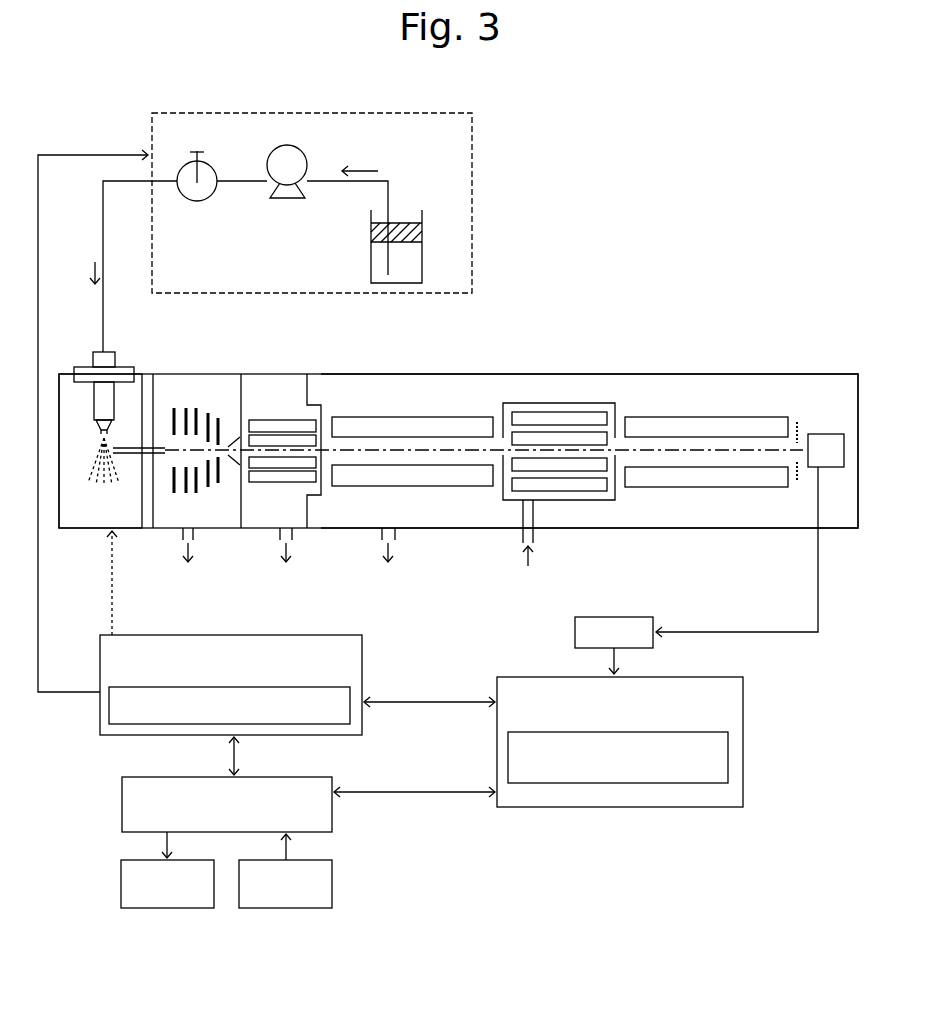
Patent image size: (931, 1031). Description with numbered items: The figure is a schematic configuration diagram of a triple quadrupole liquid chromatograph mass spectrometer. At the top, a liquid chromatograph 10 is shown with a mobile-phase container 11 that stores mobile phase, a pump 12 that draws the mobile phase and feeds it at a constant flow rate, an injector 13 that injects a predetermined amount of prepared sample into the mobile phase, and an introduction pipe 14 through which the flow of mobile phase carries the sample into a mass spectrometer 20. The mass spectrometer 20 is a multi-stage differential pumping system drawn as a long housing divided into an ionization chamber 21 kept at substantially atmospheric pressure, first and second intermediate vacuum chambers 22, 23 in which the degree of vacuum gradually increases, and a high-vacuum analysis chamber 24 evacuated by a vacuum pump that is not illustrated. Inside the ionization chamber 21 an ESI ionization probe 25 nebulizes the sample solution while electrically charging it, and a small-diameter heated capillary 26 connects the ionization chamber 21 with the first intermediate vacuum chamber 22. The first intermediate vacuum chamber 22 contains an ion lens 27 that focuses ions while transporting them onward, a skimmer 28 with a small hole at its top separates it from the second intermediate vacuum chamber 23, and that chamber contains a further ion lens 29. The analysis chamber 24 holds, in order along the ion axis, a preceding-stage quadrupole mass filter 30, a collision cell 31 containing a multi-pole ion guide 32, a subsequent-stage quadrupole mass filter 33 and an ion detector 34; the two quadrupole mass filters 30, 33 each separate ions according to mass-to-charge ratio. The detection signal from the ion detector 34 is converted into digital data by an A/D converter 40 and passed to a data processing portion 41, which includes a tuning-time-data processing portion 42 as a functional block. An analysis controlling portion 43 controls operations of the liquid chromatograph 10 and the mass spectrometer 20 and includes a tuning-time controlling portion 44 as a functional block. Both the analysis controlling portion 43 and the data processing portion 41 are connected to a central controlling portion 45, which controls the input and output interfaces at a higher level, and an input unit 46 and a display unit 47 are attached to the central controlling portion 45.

The liquid chromatograph 10 is at (473, 144).
The mobile-phase container 11 is at (423, 241).
The pump 12 is at (290, 200).
The injector 13 is at (201, 202).
The introduction pipe 14 is at (103, 207).
The mass spectrometer 20 is at (675, 331).
The ionization chamber 21 is at (93, 521).
The first intermediate vacuum chamber 22 is at (168, 522).
The second intermediate vacuum chamber 23 is at (257, 522).
The analysis chamber 24 is at (462, 522).
The ESI ionization probe 25 is at (93, 402).
The heated capillary 26 is at (133, 456).
The ion lens 27 is at (203, 407).
The skimmer 28 is at (235, 457).
The ion lens 29 is at (282, 420).
The preceding-stage quadrupole mass filter 30 is at (427, 413).
The collision cell 31 is at (592, 403).
The multi-pole ion guide 32 is at (538, 410).
The subsequent-stage quadrupole mass filter 33 is at (720, 415).
The ion detector 34 is at (822, 432).
The A/D converter 40 is at (575, 629).
The data processing portion 41 is at (745, 700).
The tuning-time-data processing portion 42 is at (729, 742).
The analysis controlling portion 43 is at (363, 655).
The tuning-time controlling portion 44 is at (351, 690).
The central controlling portion 45 is at (122, 798).
The input unit 46 is at (333, 878).
The display unit 47 is at (121, 878).